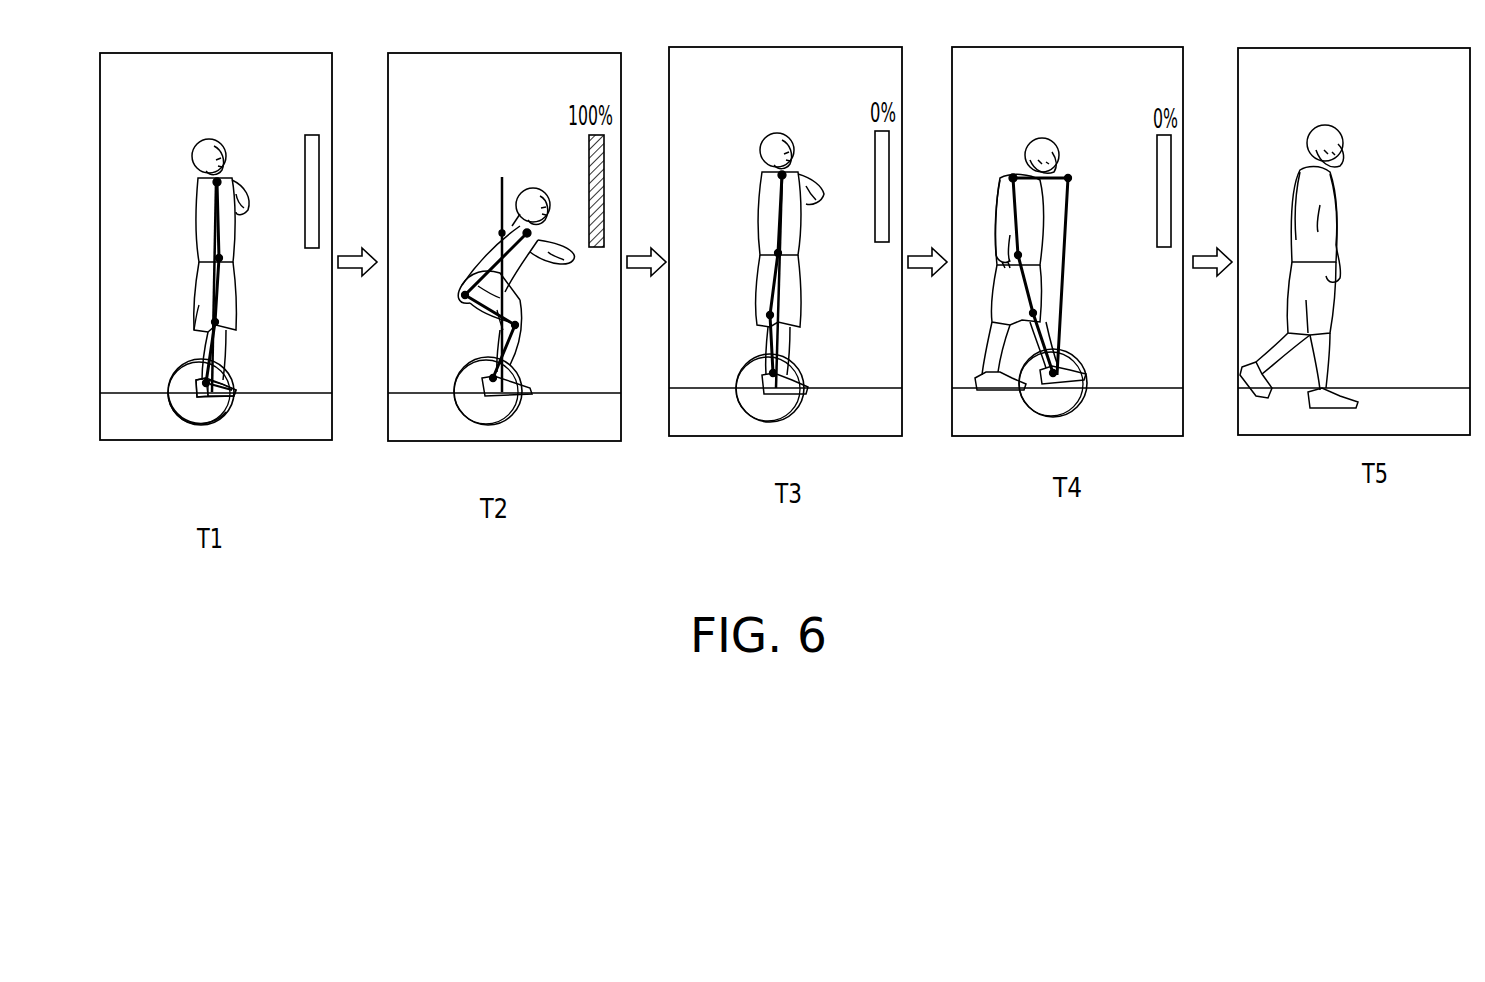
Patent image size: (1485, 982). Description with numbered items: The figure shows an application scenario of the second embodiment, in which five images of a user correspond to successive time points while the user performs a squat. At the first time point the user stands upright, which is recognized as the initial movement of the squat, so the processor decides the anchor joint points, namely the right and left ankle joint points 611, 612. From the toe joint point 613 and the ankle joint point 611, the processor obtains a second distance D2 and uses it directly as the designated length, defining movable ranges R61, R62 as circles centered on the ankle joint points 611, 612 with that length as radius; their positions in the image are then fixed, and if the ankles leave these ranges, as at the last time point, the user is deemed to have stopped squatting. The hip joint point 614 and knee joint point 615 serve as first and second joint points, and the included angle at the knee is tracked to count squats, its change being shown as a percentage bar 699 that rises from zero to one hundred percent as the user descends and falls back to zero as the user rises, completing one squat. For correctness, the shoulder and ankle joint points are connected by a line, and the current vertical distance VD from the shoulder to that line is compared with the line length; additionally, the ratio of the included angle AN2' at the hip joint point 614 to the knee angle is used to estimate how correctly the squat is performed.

The percentage bar 699 is at (319, 153).
The hip joint point 614 is at (222, 258).
The knee joint point 615 is at (219, 323).
The ankle joint point 611 is at (208, 387).
The ankle joint point 612 is at (203, 396).
The toe joint point 613 is at (240, 396).
The current vertical distance VD is at (512, 220).
The included angle AN2' is at (530, 327).
The movable range R61 is at (172, 414).
The movable range R62 is at (168, 389).
The second distance D2 is at (240, 381).